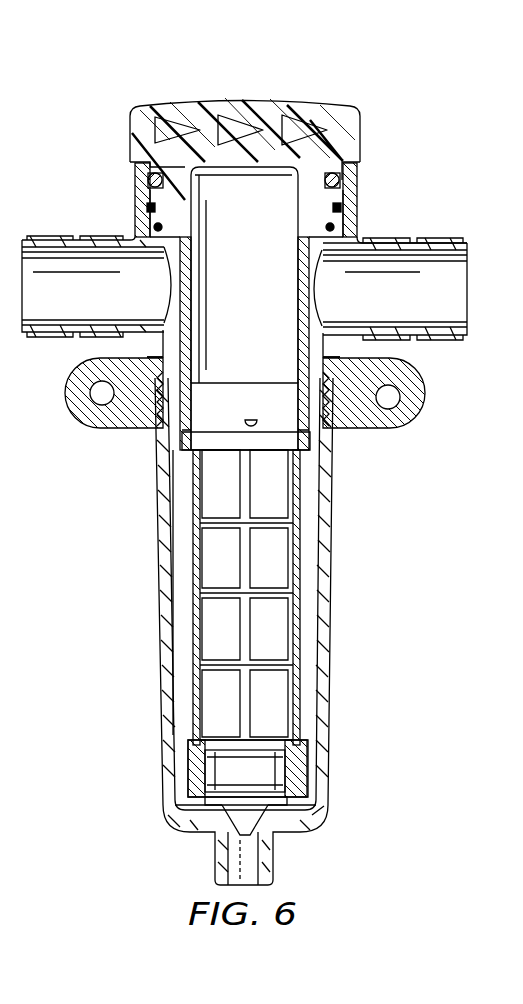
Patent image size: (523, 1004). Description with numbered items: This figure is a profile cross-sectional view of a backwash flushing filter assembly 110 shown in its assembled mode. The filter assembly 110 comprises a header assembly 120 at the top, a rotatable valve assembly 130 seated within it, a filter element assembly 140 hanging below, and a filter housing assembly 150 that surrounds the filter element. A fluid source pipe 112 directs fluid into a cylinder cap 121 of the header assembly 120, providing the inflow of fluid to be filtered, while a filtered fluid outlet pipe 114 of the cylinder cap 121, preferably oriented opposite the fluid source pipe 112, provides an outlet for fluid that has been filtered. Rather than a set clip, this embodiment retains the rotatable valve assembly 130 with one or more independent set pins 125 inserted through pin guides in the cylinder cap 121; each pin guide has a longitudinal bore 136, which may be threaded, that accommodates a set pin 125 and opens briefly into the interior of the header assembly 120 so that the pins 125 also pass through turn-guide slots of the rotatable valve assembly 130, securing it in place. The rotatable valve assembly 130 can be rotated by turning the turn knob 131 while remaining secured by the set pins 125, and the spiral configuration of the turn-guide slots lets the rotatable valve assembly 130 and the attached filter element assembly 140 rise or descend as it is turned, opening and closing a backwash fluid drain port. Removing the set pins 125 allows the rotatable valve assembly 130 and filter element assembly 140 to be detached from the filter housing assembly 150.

The filter assembly 110 is at (191, 67).
The fluid source pipe 112 is at (58, 333).
The filtered fluid outlet pipe 114 is at (436, 243).
The header assembly 120 is at (122, 203).
The cylinder cap 121 is at (354, 213).
The set pin 125 is at (140, 182).
The rotatable valve assembly 130 is at (168, 283).
The turn knob 131 is at (322, 104).
The longitudinal bore 136 is at (338, 168).
The filter element assembly 140 is at (190, 489).
The filter housing assembly 150 is at (336, 647).